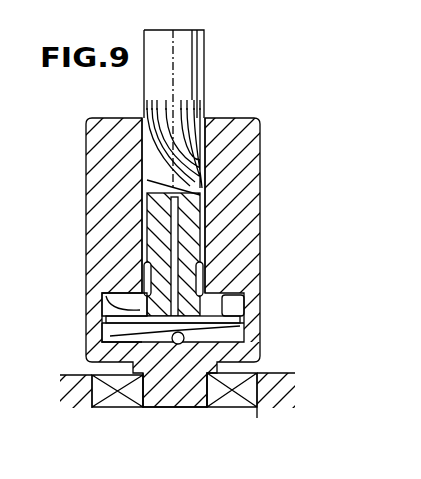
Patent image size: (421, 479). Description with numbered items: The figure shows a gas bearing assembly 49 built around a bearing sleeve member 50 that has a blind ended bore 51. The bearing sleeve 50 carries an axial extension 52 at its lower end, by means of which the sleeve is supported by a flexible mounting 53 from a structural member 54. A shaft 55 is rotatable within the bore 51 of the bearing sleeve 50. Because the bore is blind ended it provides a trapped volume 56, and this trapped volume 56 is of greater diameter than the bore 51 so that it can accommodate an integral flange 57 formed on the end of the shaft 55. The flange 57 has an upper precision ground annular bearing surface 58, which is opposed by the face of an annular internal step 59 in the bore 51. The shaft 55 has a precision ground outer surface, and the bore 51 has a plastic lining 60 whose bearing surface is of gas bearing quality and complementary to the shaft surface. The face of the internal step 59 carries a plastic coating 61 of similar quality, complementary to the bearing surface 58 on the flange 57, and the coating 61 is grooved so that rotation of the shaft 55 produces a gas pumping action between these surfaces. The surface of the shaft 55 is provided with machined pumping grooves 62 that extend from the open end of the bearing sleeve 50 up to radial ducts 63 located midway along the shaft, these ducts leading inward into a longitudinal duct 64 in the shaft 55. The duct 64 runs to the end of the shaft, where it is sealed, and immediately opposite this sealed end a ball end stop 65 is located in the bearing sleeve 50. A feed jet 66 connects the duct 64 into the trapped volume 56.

The bearing assembly 49 is at (262, 150).
The bearing sleeve member 50 is at (246, 222).
The blind ended bore 51 is at (203, 282).
The axial extension 52 is at (176, 405).
The flexible mounting 53 is at (100, 400).
The structural member 54 is at (70, 380).
The shaft 55 is at (206, 95).
The trapped volume 56 is at (185, 340).
The integral flange 57 is at (222, 305).
The annular bearing surface 58 is at (108, 321).
The annular internal step 59 is at (144, 278).
The plastic lining 60 is at (150, 195).
The plastic coating 61 is at (104, 300).
The pumping grooves 62 is at (152, 110).
The radial ducts 63 is at (145, 172).
The longitudinal duct 64 is at (173, 235).
The ball end stop 65 is at (215, 335).
The feed jet 66 is at (104, 338).